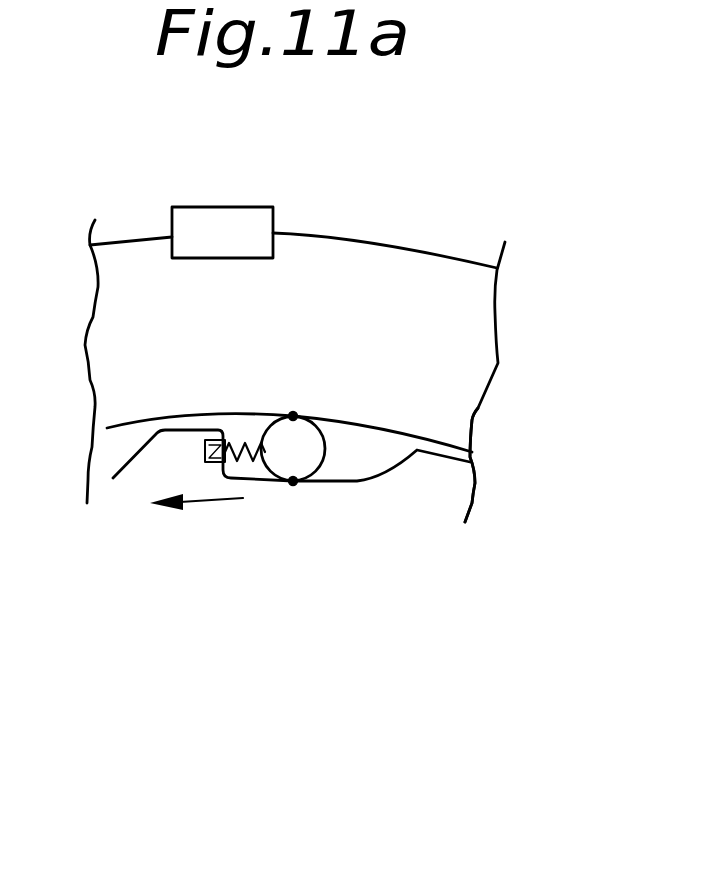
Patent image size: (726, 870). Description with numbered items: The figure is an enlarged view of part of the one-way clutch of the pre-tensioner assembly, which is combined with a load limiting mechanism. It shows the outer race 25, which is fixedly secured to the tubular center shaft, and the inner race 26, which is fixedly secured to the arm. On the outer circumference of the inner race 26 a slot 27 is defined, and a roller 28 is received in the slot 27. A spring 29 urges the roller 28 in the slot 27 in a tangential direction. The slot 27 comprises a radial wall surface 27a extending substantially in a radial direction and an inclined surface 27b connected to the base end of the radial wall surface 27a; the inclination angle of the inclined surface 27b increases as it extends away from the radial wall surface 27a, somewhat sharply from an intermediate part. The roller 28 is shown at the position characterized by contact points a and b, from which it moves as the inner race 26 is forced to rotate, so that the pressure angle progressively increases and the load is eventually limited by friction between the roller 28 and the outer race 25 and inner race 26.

The outer race 25 is at (353, 252).
The inner race 26 is at (448, 490).
The slot 27 is at (291, 582).
The radial wall surface 27a is at (256, 480).
The inclined surface 27b is at (356, 458).
The roller 28 is at (302, 437).
The spring 29 is at (240, 425).